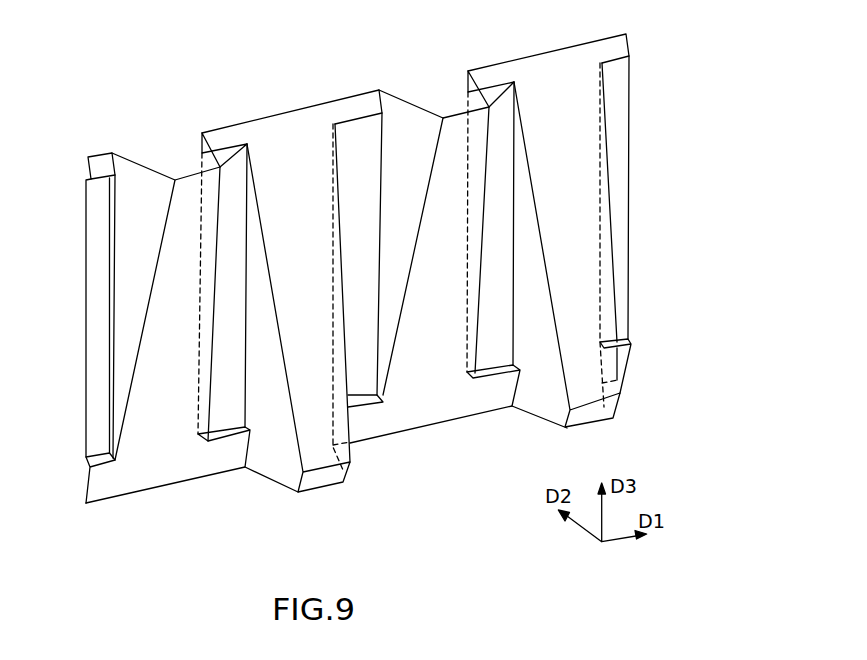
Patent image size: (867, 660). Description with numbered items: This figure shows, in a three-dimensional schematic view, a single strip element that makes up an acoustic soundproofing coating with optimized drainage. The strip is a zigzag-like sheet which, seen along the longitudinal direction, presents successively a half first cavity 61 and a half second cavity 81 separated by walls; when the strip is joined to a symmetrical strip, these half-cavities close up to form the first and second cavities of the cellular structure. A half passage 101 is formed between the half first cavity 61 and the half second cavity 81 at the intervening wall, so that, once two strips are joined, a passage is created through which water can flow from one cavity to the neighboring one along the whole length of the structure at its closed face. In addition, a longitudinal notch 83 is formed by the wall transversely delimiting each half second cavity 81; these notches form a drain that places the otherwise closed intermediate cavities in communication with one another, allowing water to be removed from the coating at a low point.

The half first cavity 61 is at (440, 98).
The half second cavity 81 is at (278, 460).
The longitudinal notch 83 is at (322, 477).
The half passage 101 is at (230, 452).